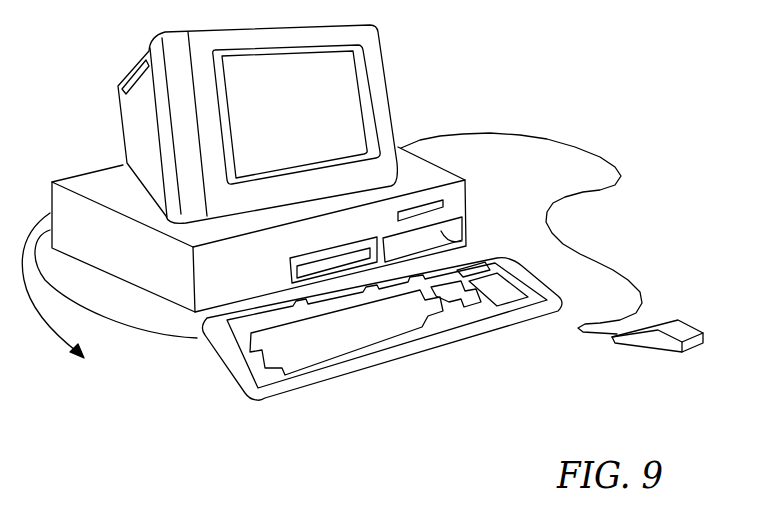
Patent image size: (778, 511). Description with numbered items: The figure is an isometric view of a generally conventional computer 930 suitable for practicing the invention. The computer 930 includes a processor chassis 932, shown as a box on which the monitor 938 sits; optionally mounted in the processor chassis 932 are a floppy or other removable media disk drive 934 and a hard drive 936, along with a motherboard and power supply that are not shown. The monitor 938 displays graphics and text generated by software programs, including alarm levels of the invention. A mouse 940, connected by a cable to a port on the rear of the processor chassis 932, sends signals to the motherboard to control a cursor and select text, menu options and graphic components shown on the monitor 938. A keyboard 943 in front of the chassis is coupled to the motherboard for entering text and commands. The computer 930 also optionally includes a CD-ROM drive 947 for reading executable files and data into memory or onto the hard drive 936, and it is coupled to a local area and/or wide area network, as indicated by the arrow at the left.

The computer 930 is at (382, 234).
The processor chassis 932 is at (300, 227).
The floppy or other removable media disk drive 934 is at (424, 208).
The hard drive 936 is at (462, 231).
The monitor 938 is at (389, 72).
The mouse 940 is at (683, 352).
The keyboard 943 is at (468, 337).
The CD-ROM drive 947 is at (290, 277).